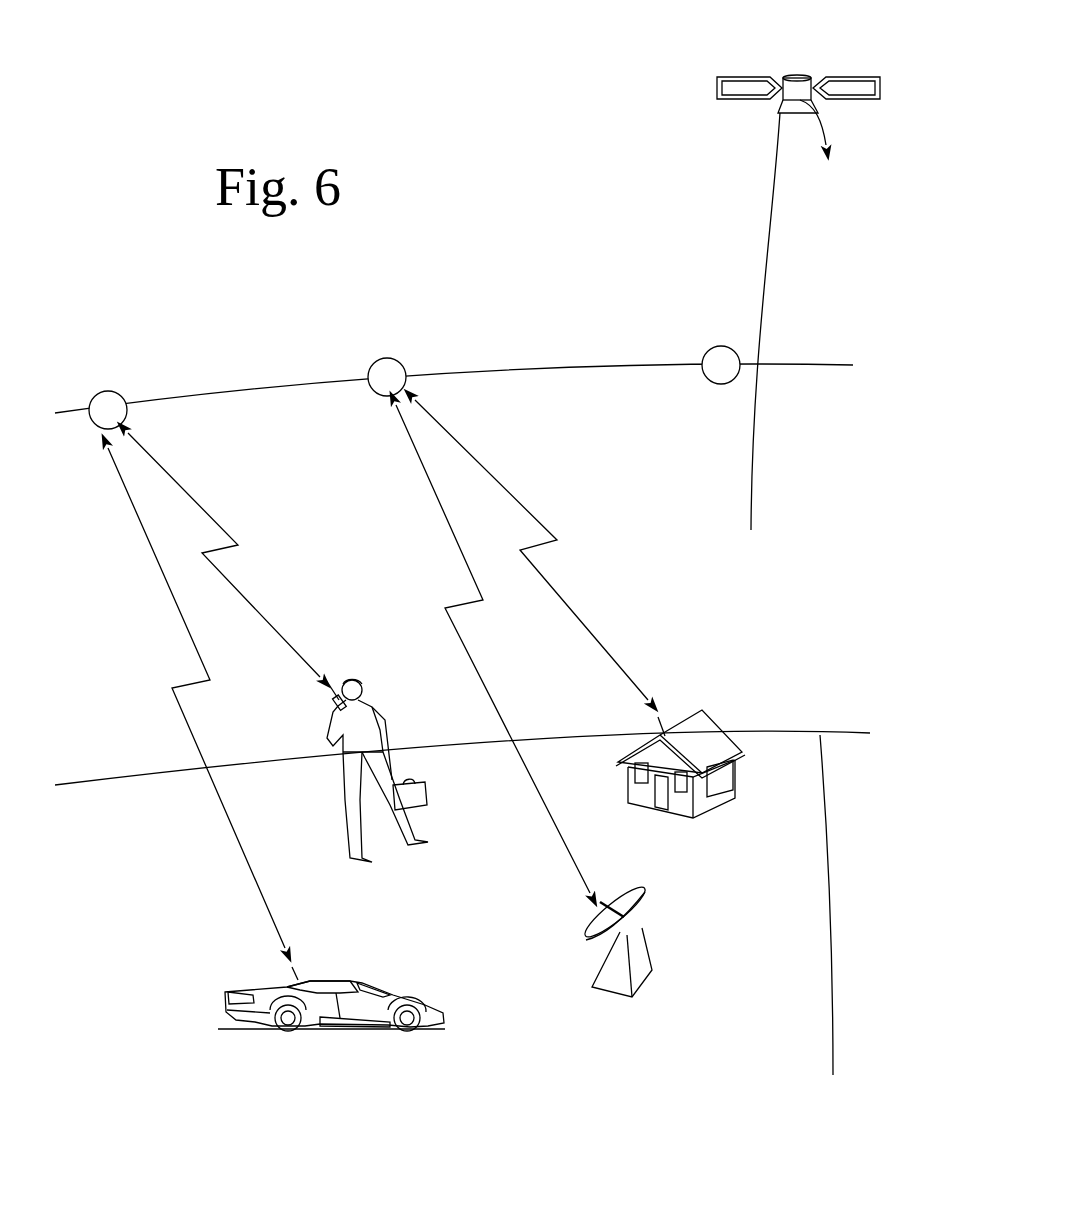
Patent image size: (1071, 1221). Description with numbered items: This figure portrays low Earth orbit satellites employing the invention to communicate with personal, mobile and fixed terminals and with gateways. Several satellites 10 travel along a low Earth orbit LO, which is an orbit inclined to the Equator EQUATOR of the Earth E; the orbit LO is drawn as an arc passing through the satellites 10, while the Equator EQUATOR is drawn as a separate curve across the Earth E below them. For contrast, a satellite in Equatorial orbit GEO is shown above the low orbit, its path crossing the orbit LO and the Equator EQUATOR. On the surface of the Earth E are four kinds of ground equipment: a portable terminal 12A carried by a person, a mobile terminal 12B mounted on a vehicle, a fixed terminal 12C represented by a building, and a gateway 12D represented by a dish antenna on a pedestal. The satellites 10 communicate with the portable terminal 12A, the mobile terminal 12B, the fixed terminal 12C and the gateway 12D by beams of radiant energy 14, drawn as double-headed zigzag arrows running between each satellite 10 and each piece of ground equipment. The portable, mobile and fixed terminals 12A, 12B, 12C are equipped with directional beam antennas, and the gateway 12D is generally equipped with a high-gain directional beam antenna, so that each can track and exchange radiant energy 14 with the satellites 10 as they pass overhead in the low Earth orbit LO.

The satellite in an orbit inclined to the Equator 10 is at (103, 391).
The radiant energy 14 is at (250, 602).
The portable terminal 12A is at (423, 693).
The mobile terminal 12B is at (335, 978).
The fixed terminal 12C is at (725, 732).
The gateway 12D is at (630, 997).
The Earth E is at (605, 733).
The low Earth orbit LO is at (538, 367).
The satellite in Equatorial orbit GEO is at (800, 76).
The plane of the Equator EQUATOR is at (833, 957).